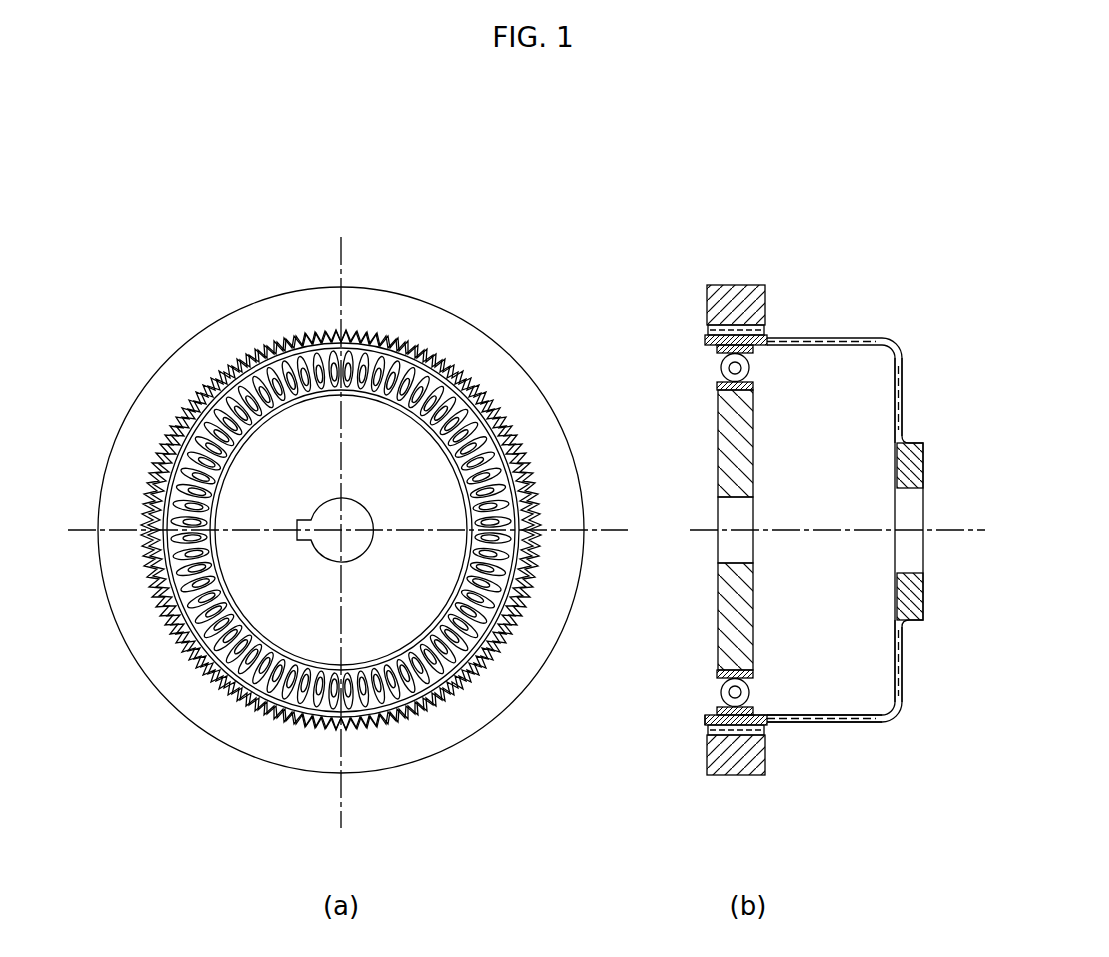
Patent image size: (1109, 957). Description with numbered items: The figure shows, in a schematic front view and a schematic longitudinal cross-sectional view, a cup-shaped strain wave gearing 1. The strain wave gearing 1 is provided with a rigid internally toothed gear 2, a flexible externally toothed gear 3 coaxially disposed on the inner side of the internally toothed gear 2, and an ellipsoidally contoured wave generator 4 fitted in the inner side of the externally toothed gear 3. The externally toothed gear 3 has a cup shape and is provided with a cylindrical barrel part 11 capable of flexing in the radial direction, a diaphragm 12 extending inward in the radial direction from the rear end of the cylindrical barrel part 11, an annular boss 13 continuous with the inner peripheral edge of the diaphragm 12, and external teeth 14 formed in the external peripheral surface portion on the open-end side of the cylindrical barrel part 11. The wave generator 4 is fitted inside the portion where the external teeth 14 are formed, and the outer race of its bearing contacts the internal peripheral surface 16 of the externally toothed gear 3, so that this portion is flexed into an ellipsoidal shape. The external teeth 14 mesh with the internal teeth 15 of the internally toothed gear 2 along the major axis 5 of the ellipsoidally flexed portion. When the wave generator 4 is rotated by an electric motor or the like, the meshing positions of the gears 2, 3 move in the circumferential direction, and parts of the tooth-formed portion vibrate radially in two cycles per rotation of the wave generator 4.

The strain wave gearing 1 is at (472, 288).
The rigid internally toothed gear 2 is at (222, 358).
The flexible externally toothed gear 3 is at (558, 535).
The wave generator 4 is at (250, 468).
The major axis 5 is at (343, 250).
The cylindrical barrel part 11 is at (834, 722).
The diaphragm 12 is at (906, 634).
The annular boss 13 is at (925, 588).
The external teeth 14 is at (764, 727).
The internal teeth 15 is at (706, 724).
The internal peripheral surface 16 is at (759, 717).